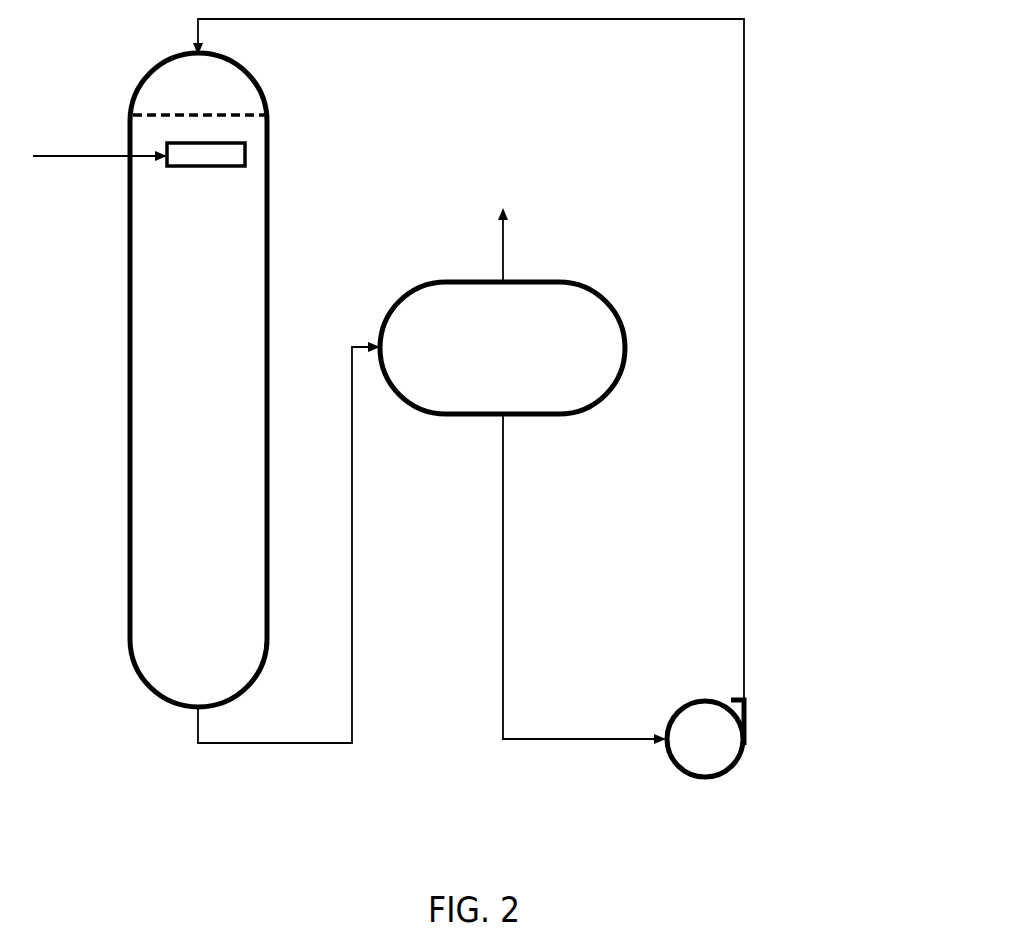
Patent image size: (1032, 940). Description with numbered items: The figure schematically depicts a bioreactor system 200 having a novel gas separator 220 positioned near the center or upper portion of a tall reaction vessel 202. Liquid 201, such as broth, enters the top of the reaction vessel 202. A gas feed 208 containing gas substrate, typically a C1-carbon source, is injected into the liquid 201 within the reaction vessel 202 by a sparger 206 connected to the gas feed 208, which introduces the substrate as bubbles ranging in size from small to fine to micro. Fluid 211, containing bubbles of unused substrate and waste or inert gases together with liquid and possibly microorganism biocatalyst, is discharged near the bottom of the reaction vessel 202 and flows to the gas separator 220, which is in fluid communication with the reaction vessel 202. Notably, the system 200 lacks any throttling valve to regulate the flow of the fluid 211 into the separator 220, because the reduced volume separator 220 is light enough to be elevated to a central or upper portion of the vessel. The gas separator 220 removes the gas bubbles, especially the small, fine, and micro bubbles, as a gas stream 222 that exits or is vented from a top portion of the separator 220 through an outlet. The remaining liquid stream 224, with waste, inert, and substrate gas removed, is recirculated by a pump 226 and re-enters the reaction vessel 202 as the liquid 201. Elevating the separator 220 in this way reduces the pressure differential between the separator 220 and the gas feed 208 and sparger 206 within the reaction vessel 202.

The bioreactor system 200 is at (816, 122).
The liquid 201 is at (742, 465).
The reaction vessel 202 is at (112, 400).
The sparger 206 is at (248, 167).
The gas feed 208 is at (107, 157).
The fluid 211 is at (193, 735).
The gas separator 220 is at (608, 300).
The gas stream 222 is at (503, 264).
The liquid stream 224 is at (500, 515).
The pump 226 is at (745, 745).